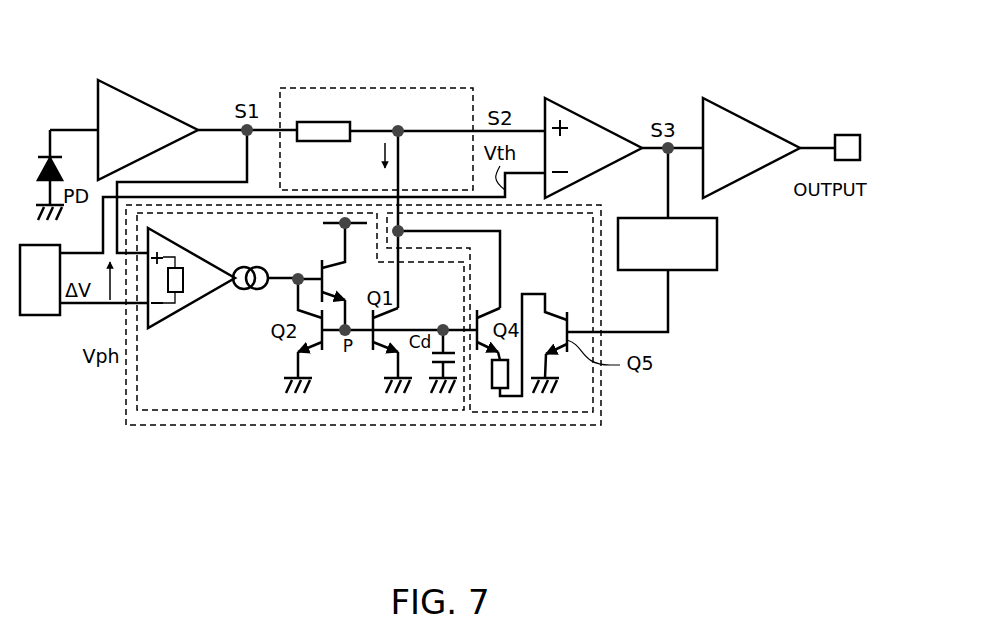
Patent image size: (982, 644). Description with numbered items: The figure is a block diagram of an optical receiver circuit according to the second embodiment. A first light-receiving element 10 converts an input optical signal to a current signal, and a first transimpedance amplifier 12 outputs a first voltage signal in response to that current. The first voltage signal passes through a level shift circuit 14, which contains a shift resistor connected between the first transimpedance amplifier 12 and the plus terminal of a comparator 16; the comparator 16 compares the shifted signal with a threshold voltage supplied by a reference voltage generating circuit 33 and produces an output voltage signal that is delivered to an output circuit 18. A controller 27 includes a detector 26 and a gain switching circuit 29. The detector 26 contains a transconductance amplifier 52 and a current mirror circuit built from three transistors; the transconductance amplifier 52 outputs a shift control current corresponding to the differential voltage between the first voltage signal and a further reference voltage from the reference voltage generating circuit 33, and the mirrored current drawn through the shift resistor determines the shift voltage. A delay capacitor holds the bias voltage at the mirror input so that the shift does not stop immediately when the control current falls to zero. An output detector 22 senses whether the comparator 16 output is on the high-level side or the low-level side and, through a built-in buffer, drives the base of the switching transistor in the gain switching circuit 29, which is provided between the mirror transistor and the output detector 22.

The first light-receiving element 10 is at (70, 170).
The first transimpedance amplifier 12 is at (133, 105).
The level shift circuit 14 is at (323, 88).
The comparator 16 is at (580, 125).
The output circuit 18 is at (730, 125).
The output detector 22 is at (717, 245).
The detector 26 is at (210, 410).
The controller 27 is at (433, 425).
The gain switching circuit 29 is at (532, 412).
The reference voltage generating circuit 33 is at (40, 316).
The transconductance amplifier 52 is at (205, 305).